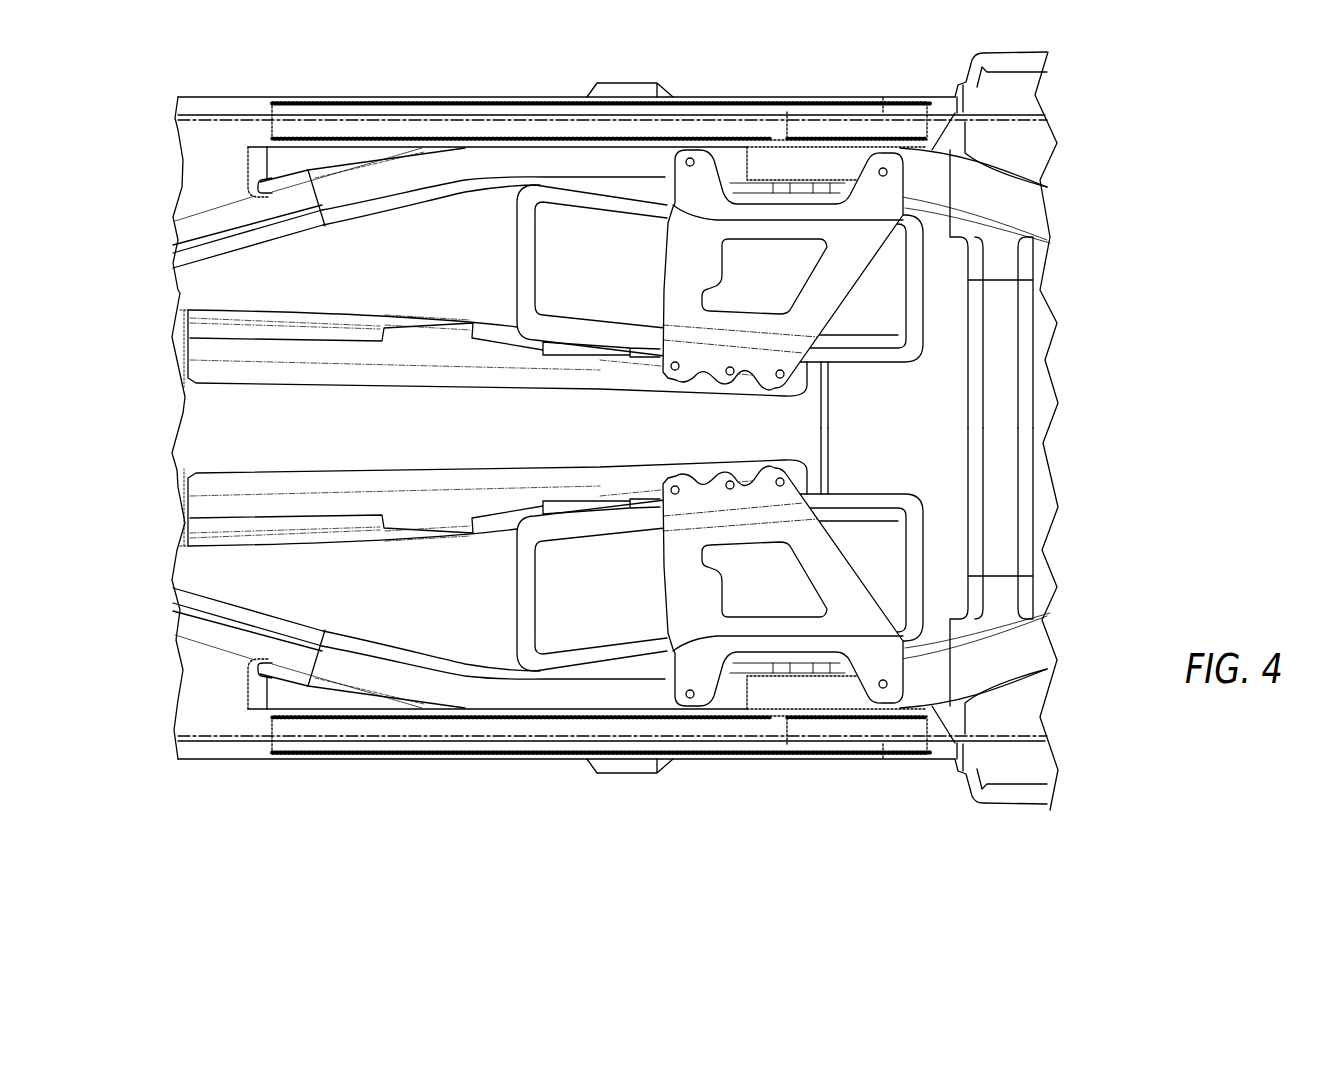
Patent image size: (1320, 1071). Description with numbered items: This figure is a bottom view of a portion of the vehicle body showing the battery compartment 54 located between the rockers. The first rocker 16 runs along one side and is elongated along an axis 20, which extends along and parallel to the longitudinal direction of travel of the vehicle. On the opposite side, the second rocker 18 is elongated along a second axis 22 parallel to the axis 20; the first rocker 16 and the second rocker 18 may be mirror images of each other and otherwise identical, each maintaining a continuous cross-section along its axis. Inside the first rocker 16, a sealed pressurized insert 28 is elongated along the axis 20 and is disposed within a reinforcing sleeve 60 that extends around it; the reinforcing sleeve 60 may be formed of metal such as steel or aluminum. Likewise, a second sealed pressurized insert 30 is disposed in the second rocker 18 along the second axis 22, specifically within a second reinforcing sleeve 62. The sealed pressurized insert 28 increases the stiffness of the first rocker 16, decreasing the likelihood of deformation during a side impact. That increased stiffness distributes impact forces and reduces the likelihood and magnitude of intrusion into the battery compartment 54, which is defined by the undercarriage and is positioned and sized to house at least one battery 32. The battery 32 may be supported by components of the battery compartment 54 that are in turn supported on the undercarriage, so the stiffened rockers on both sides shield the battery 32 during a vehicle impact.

The first rocker 16 is at (210, 760).
The second rocker 18 is at (220, 96).
The axis 20 is at (540, 737).
The second axis 22 is at (528, 120).
The sealed pressurized insert 28 is at (292, 754).
The second sealed pressurized insert 30 is at (292, 102).
The battery 32 is at (655, 182).
The battery compartment 54 is at (860, 167).
The reinforcing sleeve 60 is at (452, 720).
The second reinforcing sleeve 62 is at (452, 136).